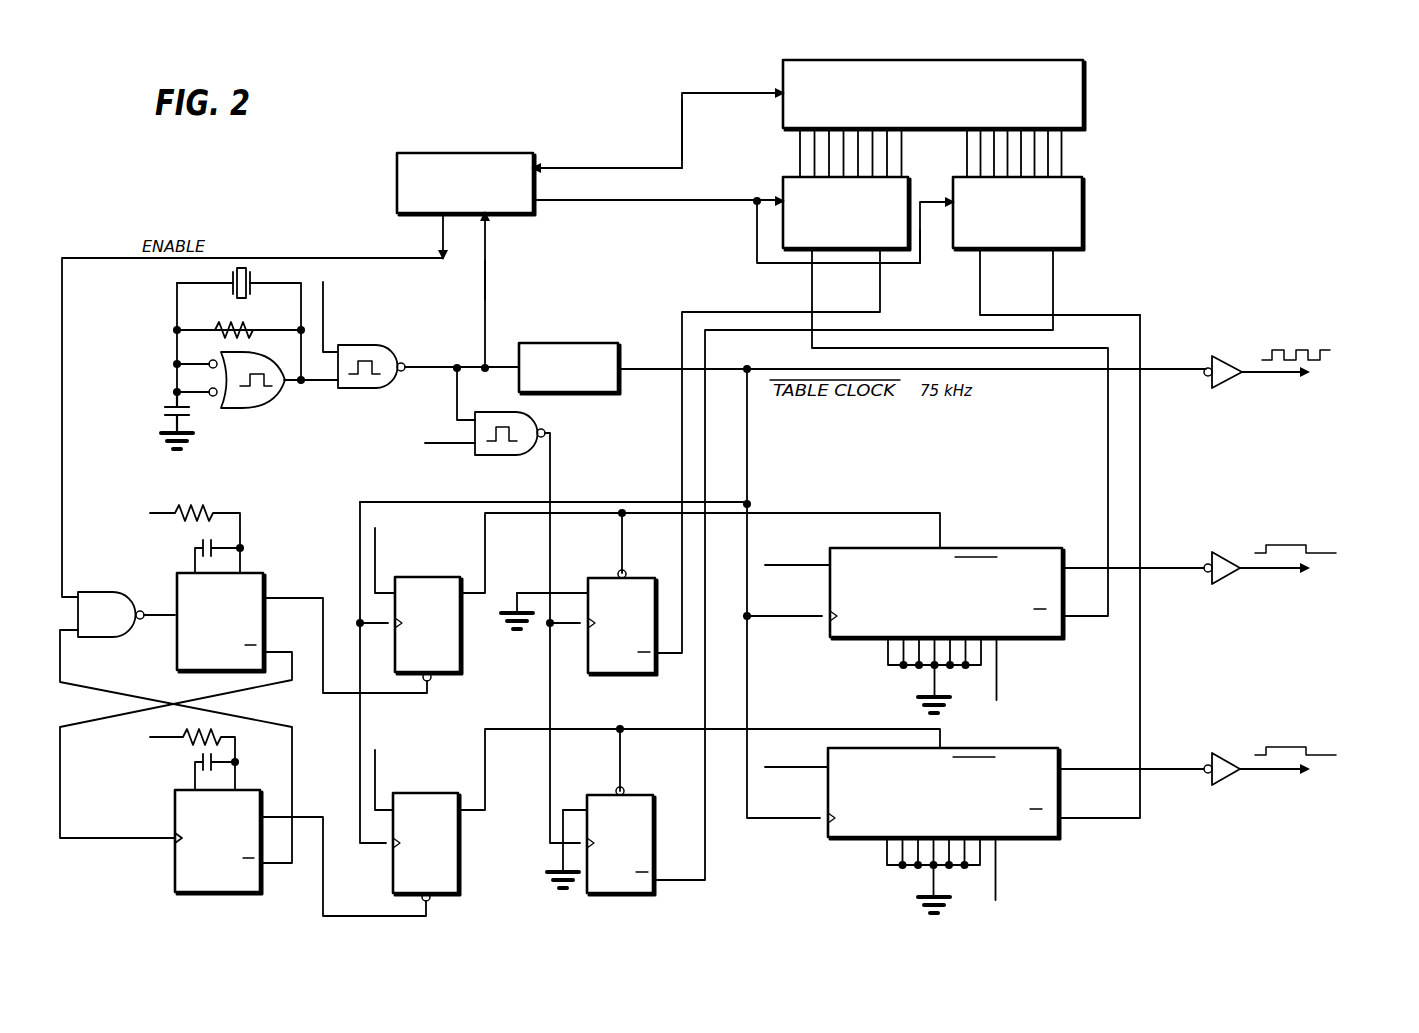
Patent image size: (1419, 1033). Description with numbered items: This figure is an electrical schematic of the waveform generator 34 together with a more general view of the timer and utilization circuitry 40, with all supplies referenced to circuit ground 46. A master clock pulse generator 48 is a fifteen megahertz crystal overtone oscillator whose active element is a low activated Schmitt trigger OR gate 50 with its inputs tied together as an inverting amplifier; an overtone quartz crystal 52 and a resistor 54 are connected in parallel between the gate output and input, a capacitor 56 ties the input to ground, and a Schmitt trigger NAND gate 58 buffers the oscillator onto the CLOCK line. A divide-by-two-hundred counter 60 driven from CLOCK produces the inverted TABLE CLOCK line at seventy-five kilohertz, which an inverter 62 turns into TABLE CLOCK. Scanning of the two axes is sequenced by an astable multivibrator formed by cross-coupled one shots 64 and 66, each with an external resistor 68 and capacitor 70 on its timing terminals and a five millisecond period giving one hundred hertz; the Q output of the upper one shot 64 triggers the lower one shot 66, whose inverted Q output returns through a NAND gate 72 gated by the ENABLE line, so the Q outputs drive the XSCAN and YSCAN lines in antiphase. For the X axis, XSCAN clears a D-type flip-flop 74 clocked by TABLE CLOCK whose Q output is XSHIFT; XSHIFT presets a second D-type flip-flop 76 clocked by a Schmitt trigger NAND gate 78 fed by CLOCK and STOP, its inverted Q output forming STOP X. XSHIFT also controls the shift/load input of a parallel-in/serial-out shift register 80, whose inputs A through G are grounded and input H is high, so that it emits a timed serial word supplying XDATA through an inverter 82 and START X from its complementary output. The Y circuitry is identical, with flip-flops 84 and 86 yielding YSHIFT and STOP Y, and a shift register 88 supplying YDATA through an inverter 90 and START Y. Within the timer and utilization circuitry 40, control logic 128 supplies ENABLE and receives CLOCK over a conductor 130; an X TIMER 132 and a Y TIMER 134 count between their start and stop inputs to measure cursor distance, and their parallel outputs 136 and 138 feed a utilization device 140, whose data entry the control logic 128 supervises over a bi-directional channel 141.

The control logic 128 is at (533, 158).
The conductor 130 is at (486, 268).
The bi-directional channel 141 is at (678, 122).
The utilization device 140 is at (934, 95).
The parallel outputs 136 is at (795, 147).
The parallel outputs 138 is at (1068, 160).
The X TIMER 132 is at (783, 187).
The Y TIMER 134 is at (1082, 222).
The timer and utilization circuitry 40 is at (1108, 252).
The waveform generator 34 is at (1118, 302).
The master clock pulse generator 48 is at (218, 350).
The overtone quartz crystal 52 is at (233, 290).
The resistor 54 is at (250, 327).
The low activated Schmitt trigger OR gate 50 is at (256, 396).
The capacitor 56 is at (172, 410).
The circuit ground 46 is at (168, 446).
The Schmitt trigger NAND gate 58 is at (392, 386).
The divide-by-two-hundred counter 60 is at (622, 333).
The Schmitt trigger NAND gate 78 is at (498, 400).
The NAND gate 72 is at (113, 578).
The external resistor 68 is at (213, 496).
The capacitor 70 is at (209, 536).
The one shot 64 is at (177, 590).
The inverter 62 is at (262, 545).
The one shot 66 is at (175, 800).
The D-type flip-flop 74 is at (447, 560).
The D-type flip-flop 76 is at (608, 560).
The D-type flip-flop 84 is at (458, 874).
The D-type flip-flop 86 is at (595, 770).
The parallel-in/serial-out shift register 80 is at (1018, 532).
The parallel-in/serial-out shift register 88 is at (1058, 732).
The inverter 82 is at (1206, 566).
The inverter 90 is at (1206, 767).